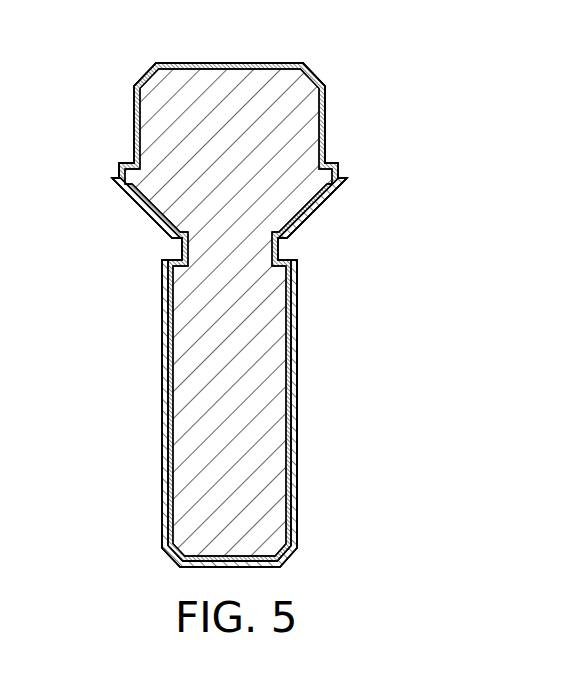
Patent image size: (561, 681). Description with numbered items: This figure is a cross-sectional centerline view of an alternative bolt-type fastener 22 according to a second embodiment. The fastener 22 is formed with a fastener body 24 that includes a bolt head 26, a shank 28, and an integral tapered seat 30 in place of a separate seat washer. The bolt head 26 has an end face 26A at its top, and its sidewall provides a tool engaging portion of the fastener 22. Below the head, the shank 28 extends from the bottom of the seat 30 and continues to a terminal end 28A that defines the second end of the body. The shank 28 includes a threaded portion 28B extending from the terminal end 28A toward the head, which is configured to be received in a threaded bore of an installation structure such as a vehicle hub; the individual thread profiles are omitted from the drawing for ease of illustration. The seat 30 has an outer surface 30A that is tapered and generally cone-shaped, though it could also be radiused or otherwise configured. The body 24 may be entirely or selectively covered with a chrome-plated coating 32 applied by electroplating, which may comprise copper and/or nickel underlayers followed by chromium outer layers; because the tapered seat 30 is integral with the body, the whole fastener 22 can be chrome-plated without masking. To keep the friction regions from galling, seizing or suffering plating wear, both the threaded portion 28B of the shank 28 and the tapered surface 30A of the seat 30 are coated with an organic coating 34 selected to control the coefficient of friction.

The bolt-type fastener 22 is at (110, 54).
The fastener body 24 is at (440, 63).
The bolt head 26 is at (85, 62).
The end face 26A is at (291, 63).
The shank 28 is at (85, 233).
The terminal end 28A is at (262, 567).
The threaded portion 28B is at (323, 255).
The tapered seat 30 is at (405, 160).
The outer surface 30A is at (352, 180).
The chrome-plated coating 32 is at (133, 116).
The organic coating 34 is at (151, 222).